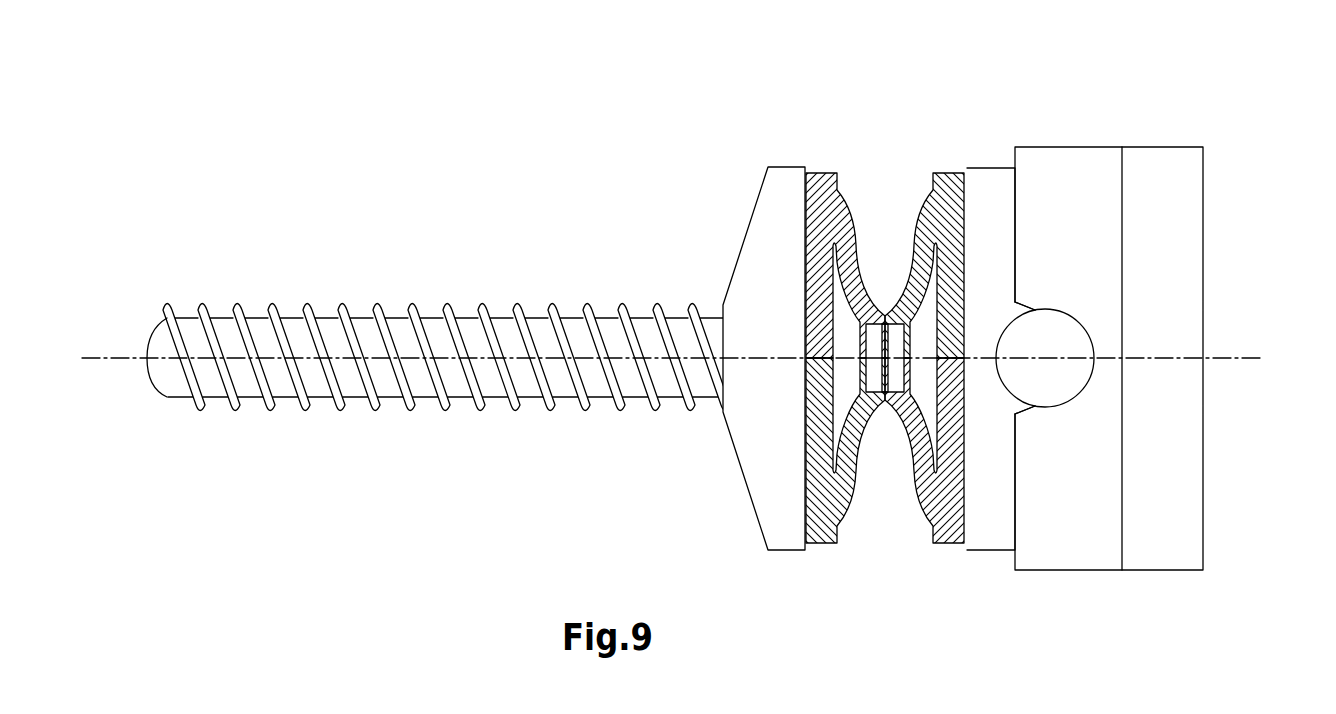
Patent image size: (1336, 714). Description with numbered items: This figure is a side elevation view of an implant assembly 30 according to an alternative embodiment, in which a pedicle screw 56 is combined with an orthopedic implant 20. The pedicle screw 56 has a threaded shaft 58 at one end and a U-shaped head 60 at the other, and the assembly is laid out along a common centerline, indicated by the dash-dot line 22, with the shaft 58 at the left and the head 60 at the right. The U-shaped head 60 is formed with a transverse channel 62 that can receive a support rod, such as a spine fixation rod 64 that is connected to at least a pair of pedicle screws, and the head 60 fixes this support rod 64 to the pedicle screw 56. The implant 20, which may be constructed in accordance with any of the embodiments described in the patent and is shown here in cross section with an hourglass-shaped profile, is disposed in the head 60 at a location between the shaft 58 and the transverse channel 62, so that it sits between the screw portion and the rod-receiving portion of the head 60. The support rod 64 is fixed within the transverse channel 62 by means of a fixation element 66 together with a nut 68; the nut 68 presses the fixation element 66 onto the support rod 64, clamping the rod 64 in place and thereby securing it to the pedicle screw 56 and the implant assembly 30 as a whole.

The implant 20 is at (921, 502).
The longitudinal axis 22 is at (1226, 358).
The implant assembly 30 is at (476, 358).
The pedicle screw 56 is at (731, 276).
The shaft 58 is at (378, 375).
The U-shaped head 60 is at (1105, 336).
The transverse channel 62 is at (1007, 322).
The spine fixation rod 64 is at (1057, 345).
The fixation element 66 is at (1068, 515).
The nut 68 is at (1165, 473).